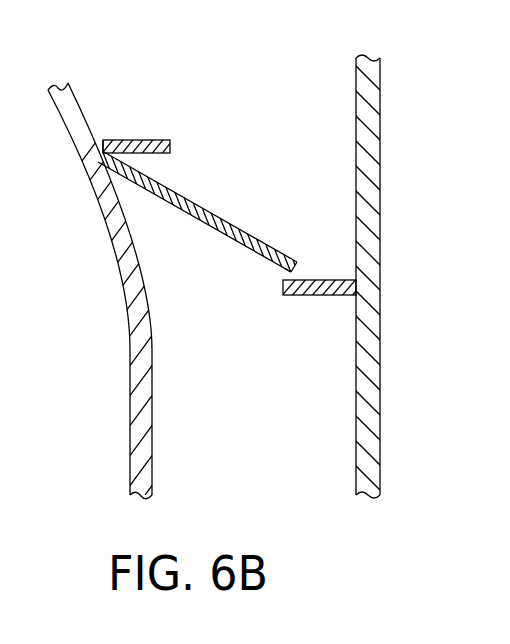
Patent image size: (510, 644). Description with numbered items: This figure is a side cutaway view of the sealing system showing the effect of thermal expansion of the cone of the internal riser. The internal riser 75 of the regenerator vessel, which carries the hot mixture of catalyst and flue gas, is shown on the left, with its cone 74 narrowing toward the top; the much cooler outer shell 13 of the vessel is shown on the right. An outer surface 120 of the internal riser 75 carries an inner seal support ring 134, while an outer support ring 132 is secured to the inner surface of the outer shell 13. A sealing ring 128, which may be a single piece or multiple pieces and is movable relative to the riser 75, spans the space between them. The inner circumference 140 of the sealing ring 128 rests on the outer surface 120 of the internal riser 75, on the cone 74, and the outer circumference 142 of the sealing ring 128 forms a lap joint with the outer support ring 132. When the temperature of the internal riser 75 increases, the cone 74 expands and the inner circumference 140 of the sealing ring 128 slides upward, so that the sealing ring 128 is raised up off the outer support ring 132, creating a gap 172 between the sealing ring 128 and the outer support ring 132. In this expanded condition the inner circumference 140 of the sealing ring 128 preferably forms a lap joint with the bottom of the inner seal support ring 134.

The outer shell 13 is at (376, 256).
The cone 74 is at (101, 188).
The internal riser 75 is at (61, 305).
The outer surface of the internal riser 120 is at (125, 322).
The sealing ring 128 is at (215, 210).
The outer support ring 132 is at (304, 296).
The inner seal support ring 134 is at (135, 138).
The inner circumference of the sealing ring 140 is at (107, 142).
The outer circumference of the sealing ring 142 is at (300, 260).
The gap 172 is at (290, 273).